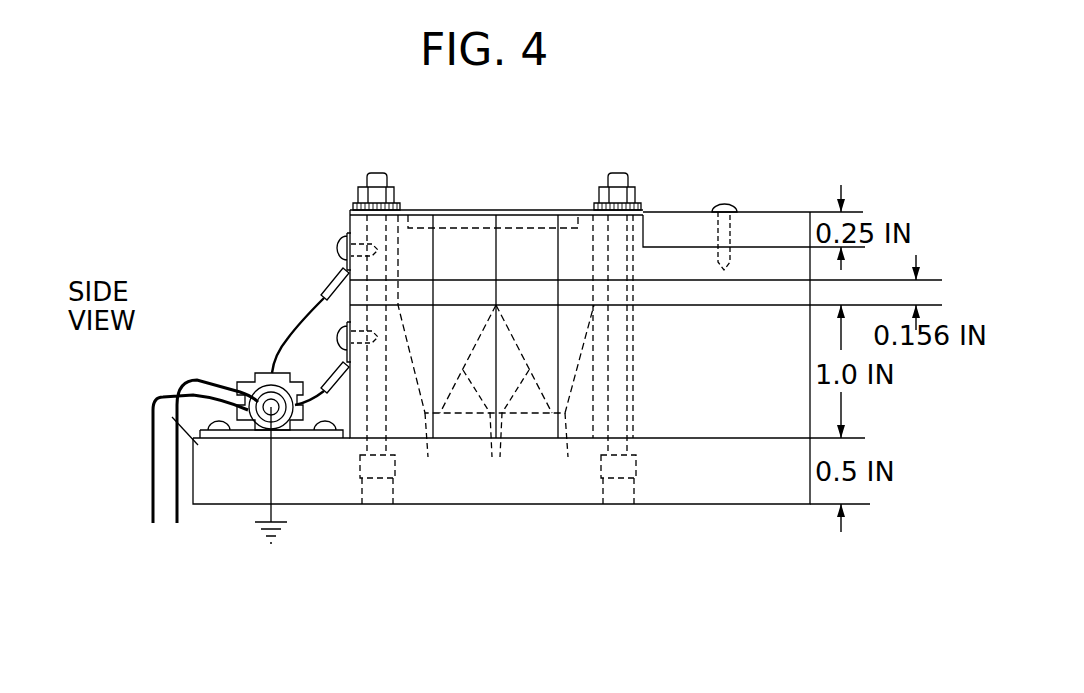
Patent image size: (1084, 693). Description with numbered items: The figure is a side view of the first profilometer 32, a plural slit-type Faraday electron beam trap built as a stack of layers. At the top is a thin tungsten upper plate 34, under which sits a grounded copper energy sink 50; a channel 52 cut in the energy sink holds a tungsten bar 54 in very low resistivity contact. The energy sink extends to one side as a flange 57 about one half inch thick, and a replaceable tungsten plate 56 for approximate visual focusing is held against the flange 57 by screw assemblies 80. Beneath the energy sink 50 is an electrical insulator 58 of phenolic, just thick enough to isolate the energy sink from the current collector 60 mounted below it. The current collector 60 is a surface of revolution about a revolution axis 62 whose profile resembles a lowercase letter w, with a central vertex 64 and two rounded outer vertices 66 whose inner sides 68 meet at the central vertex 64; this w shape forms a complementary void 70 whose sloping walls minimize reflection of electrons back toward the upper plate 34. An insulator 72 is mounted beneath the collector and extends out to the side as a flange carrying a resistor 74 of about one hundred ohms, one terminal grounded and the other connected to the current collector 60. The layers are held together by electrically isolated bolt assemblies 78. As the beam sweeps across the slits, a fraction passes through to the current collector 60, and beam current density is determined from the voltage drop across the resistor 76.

The first profilometer 32 is at (287, 268).
The upper plate 34 is at (418, 209).
The energy sink 50 is at (373, 238).
The channel 52 is at (474, 232).
The bar 54 is at (524, 222).
The replaceable plate 56 is at (753, 225).
The flange 57 is at (770, 263).
The electrical insulator 58 is at (772, 290).
The current collector 60 is at (725, 431).
The revolution axis 62 is at (498, 196).
The central vertex 64 is at (497, 306).
The rounded outer vertices 66 is at (494, 450).
The inner side 68 is at (496, 428).
The void 70 is at (470, 346).
The insulator 72 is at (763, 478).
The resistor 74 is at (151, 410).
The resistor 76 is at (269, 372).
The bolt assemblies 78 is at (361, 190).
The screw assemblies 80 is at (727, 195).